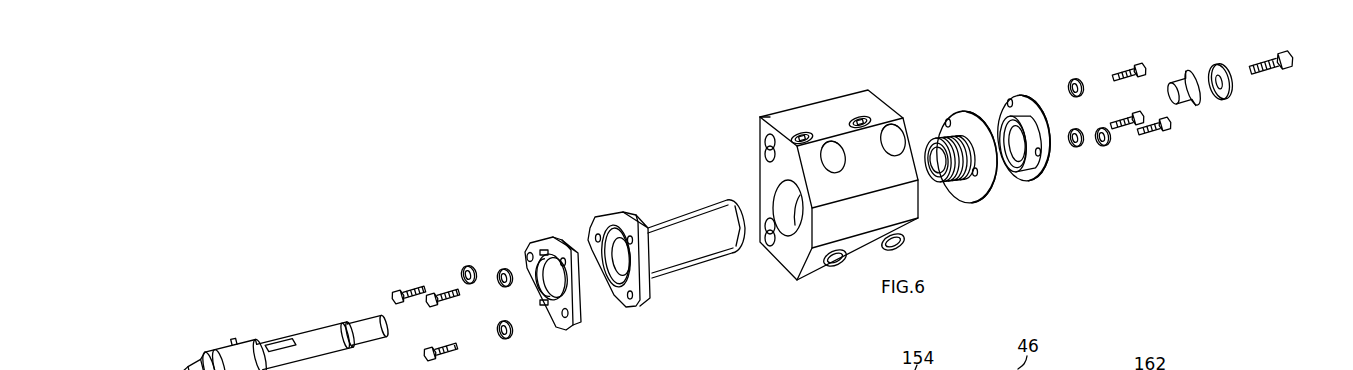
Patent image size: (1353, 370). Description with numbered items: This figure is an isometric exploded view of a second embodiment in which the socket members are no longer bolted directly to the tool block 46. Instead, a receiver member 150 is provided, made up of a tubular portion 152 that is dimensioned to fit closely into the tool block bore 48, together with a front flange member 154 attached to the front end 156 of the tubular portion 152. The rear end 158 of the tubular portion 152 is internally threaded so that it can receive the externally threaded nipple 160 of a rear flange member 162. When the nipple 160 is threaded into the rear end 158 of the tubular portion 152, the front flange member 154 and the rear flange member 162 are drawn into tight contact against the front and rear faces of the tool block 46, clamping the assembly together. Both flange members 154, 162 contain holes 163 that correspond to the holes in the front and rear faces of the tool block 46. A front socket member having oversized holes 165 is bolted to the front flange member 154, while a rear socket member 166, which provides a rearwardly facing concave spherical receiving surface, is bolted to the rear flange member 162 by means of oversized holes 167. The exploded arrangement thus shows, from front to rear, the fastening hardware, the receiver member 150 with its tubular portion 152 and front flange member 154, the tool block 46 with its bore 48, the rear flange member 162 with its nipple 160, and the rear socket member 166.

The tool block 46 is at (833, 192).
The tool block bore 48 is at (784, 202).
The receiver member 150 is at (668, 198).
The tubular portion 152 is at (700, 205).
The front flange member 154 is at (601, 257).
The front end 156 is at (600, 222).
The rear end 158 is at (735, 200).
The externally threaded nipple 160 is at (933, 142).
The rear flange member 162 is at (946, 127).
The holes 163 is at (628, 300).
The oversized holes 165 is at (525, 262).
The rear socket member 166 is at (1040, 136).
The oversized holes 167 is at (1040, 180).